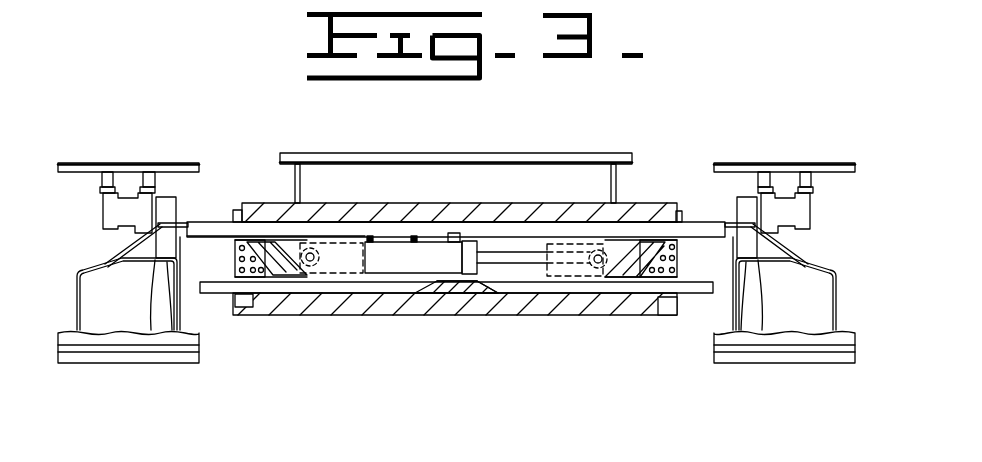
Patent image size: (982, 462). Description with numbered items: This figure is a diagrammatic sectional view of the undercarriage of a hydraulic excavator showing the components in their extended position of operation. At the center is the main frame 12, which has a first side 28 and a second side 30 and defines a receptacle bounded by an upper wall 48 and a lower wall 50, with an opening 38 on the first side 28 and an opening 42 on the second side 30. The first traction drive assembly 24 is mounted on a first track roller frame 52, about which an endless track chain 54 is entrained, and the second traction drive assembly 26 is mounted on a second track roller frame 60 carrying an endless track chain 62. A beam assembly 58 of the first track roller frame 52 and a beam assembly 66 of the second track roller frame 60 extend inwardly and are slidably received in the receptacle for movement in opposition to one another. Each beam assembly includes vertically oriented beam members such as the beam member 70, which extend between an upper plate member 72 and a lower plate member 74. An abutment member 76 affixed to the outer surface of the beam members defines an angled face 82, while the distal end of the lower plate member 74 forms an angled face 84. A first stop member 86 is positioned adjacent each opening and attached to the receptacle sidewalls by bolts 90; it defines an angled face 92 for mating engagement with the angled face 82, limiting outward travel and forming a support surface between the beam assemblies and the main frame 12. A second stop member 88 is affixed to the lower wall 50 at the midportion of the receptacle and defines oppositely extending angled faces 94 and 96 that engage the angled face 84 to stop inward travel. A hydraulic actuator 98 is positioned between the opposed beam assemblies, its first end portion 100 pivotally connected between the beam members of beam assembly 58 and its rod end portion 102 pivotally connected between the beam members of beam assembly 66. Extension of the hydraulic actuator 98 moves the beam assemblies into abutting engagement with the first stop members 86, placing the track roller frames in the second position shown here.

The main frame 12 is at (423, 157).
The first traction drive assembly 24 is at (114, 380).
The second traction drive assembly 26 is at (785, 385).
The first side 28 is at (235, 215).
The second side 30 is at (678, 212).
The opening 38 is at (233, 212).
The opening 42 is at (390, 222).
The upper wall 48 is at (453, 203).
The lower wall 50 is at (537, 300).
The first track roller frame 52 is at (83, 270).
The endless track chain 54 is at (88, 352).
The beam assembly 58 is at (208, 300).
The second track roller frame 60 is at (836, 273).
The endless track chain 62 is at (825, 352).
The beam assembly 66 is at (699, 302).
The beam member 70 is at (192, 275).
The upper plate member 72 is at (570, 222).
The lower plate member 74 is at (325, 285).
The abutment member 76 is at (273, 247).
The angled face 82 is at (262, 278).
The angled face 84 is at (513, 287).
The first stop member 86 is at (236, 262).
The second stop member 88 is at (463, 290).
The bolts 90 is at (672, 274).
The angled face 92 is at (262, 273).
The angled face 94 is at (443, 290).
The angled face 96 is at (483, 285).
The hydraulic actuator 98 is at (422, 250).
The first end portion 100 is at (355, 287).
The rod end portion 102 is at (595, 237).